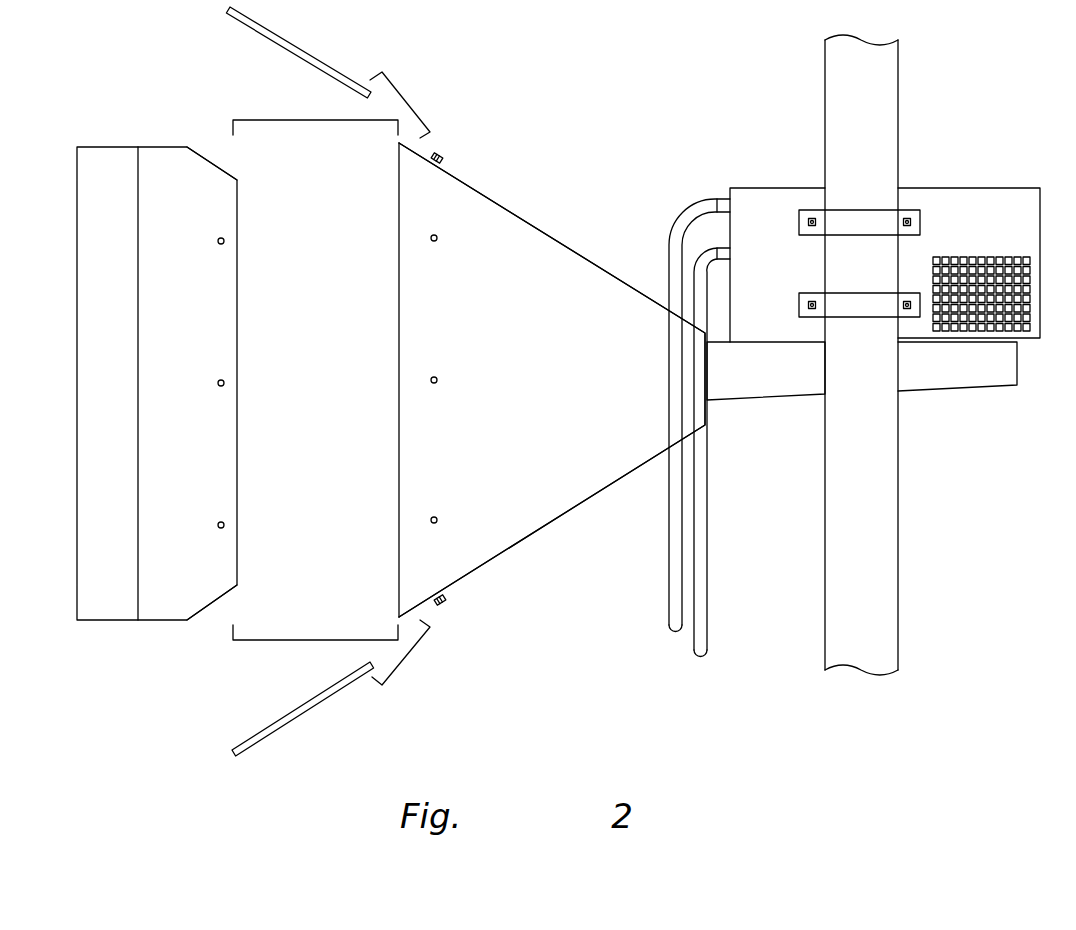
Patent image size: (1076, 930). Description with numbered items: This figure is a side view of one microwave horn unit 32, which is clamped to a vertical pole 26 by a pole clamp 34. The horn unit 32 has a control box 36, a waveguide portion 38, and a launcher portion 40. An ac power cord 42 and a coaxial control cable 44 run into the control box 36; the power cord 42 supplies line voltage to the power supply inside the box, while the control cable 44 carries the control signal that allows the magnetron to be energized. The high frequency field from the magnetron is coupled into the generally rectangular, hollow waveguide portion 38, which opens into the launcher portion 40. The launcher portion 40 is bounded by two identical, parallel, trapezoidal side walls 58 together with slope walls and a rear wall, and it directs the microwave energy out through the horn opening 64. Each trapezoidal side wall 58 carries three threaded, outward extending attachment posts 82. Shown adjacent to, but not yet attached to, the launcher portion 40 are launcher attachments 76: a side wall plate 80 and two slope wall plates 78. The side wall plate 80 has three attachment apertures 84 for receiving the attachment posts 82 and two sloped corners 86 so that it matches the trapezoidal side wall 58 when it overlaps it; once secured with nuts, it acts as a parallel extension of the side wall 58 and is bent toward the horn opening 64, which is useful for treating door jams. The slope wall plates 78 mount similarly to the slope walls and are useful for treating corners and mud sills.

The support post 26 is at (833, 133).
The microwave horn unit 32 is at (633, 92).
The pole clamp 34 is at (872, 222).
The control box 36 is at (1010, 242).
The waveguide portion 38 is at (740, 394).
The launcher portion 40 is at (632, 351).
The ac power cord 42 is at (702, 612).
The coaxial control cable 44 is at (673, 556).
The trapezoidal side wall 58 is at (630, 430).
The horn opening 64 is at (342, 350).
The launcher attachment 76 is at (167, 108).
The slope wall plate 78 is at (320, 63).
The side wall plate 80 is at (153, 405).
The attachment post 82 is at (441, 152).
The attachment aperture 84 is at (218, 241).
The sloped corner 86 is at (207, 160).